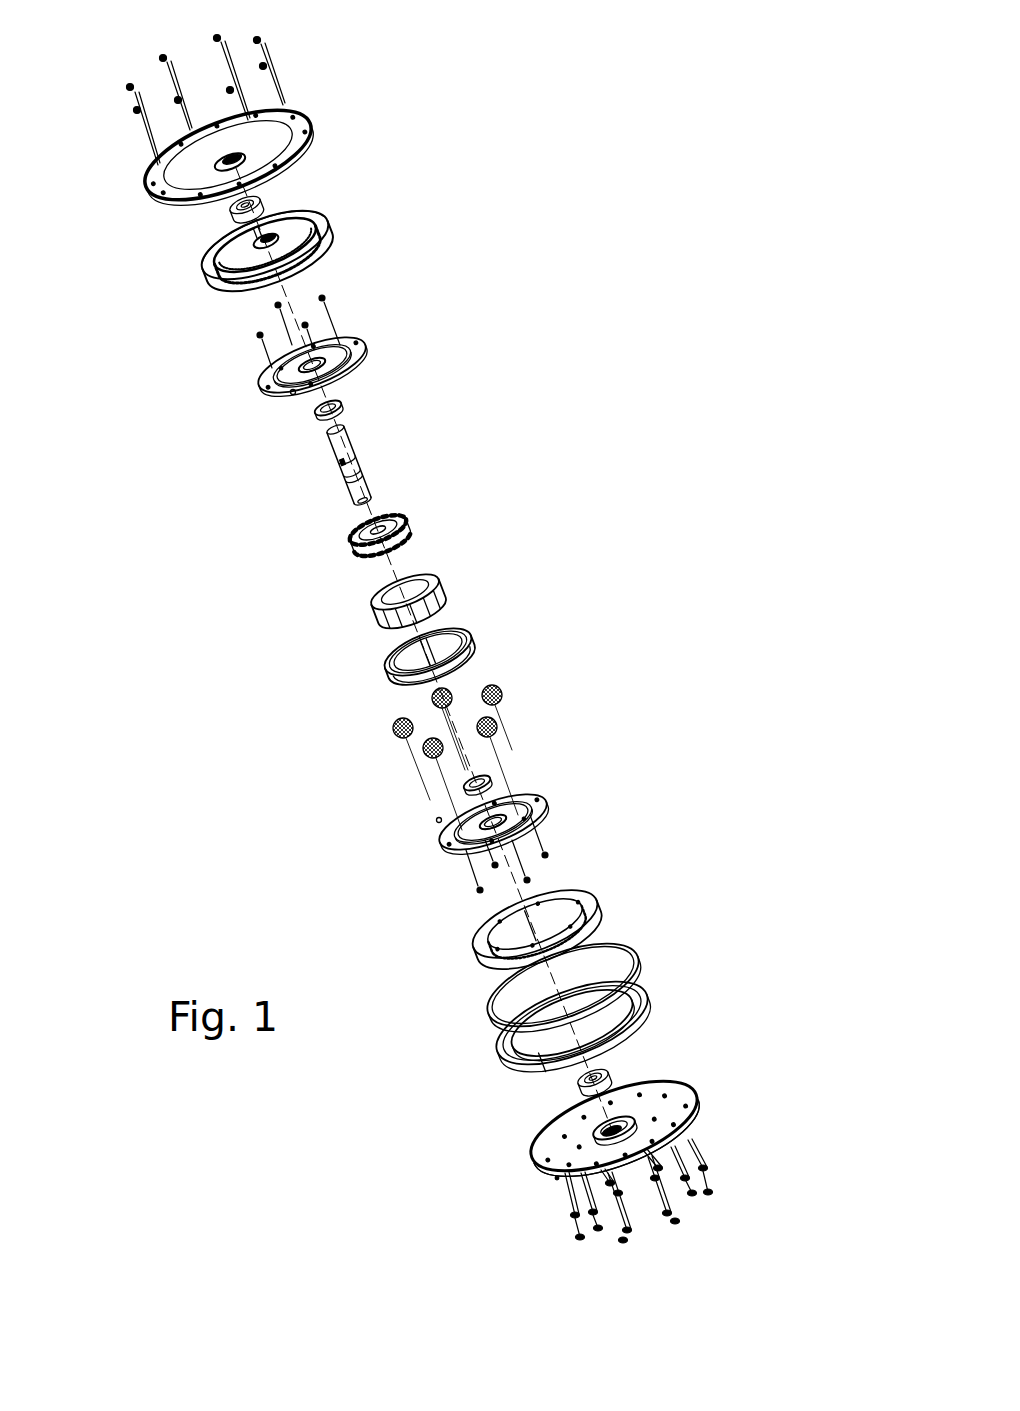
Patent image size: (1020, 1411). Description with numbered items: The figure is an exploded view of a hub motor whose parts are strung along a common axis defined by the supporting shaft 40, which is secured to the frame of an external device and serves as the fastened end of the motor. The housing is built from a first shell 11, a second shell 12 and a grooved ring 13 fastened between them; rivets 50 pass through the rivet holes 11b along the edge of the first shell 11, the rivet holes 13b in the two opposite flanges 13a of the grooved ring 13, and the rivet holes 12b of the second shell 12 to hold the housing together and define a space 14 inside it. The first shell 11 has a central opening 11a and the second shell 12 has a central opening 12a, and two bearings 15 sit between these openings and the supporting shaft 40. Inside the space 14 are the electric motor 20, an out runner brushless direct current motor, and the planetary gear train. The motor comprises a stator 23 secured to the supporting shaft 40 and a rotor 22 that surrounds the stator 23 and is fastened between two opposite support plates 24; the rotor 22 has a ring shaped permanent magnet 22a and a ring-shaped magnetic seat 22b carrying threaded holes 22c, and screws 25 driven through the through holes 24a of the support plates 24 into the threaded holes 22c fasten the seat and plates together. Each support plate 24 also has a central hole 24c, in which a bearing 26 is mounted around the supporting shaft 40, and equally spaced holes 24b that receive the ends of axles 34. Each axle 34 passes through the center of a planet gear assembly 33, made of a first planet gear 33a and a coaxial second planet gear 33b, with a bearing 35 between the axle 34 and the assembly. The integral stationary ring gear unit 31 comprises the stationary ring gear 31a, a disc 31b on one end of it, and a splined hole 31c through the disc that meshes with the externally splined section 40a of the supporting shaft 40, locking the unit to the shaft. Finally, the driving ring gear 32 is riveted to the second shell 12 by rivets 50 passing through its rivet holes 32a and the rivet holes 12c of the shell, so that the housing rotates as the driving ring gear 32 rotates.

The first shell 11 is at (258, 112).
The central opening 11a is at (250, 162).
The rivet holes 11b is at (296, 135).
The second shell 12 is at (642, 1146).
The central opening 12a is at (672, 1120).
The rivet holes 12b is at (556, 1180).
The rivet holes 12c is at (562, 1140).
The grooved ring 13 is at (633, 1007).
The flanges 13a is at (648, 1032).
The rivet holes 13b is at (636, 980).
The space 14 is at (536, 1060).
The bearings 15 is at (230, 208).
The electric motor 20 is at (430, 496).
The rotor 22 is at (245, 598).
The permanent magnet 22a is at (370, 602).
The magnetic seat 22b is at (388, 662).
The threaded holes 22c is at (405, 690).
The stator 23 is at (350, 540).
The support plates 24 is at (262, 372).
The through holes 24a is at (342, 374).
The holes 24b is at (293, 396).
The central hole 24c is at (318, 358).
The screws 25 is at (256, 336).
The bearings 26 is at (340, 406).
The stationary ring gear unit 31 is at (303, 241).
The stationary ring gear 31a is at (330, 226).
The disc 31b is at (340, 245).
The splined hole 31c is at (255, 248).
The driving ring gear 32 is at (596, 918).
The rivet holes 32a is at (512, 944).
The planet gear assemblies 33 is at (625, 620).
The first planet gear 33a is at (496, 697).
The second planet gear 33b is at (503, 705).
The axles 34 is at (490, 740).
The bearing 35 is at (496, 741).
The supporting shaft 40 is at (405, 454).
The externally splined section 40a is at (350, 452).
The rivets 50 is at (126, 90).